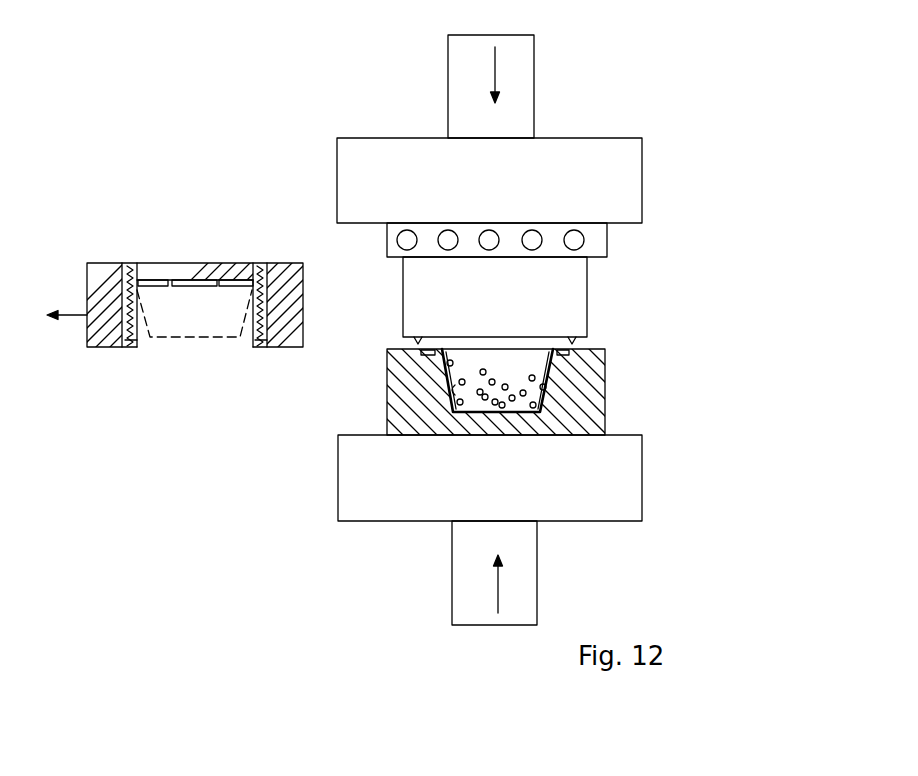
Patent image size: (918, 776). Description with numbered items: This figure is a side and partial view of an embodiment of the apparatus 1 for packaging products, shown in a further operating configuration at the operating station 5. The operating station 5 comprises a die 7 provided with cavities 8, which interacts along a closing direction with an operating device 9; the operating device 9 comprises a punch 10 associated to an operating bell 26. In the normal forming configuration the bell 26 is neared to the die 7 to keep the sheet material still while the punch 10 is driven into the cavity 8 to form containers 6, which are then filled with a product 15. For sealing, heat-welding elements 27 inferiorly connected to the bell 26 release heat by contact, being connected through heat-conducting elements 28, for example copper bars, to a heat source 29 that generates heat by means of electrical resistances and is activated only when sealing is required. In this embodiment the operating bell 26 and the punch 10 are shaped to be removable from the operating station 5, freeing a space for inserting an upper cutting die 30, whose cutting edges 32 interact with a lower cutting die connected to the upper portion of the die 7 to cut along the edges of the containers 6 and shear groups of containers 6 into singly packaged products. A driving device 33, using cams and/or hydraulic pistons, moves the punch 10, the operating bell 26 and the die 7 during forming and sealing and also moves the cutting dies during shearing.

The apparatus 1 is at (186, 80).
The operating station 5 is at (523, 266).
The containers 6 is at (553, 367).
The die 7 is at (605, 410).
The cavities 8 is at (455, 392).
The operating device 9 is at (659, 194).
The punch 10 is at (187, 320).
The product 15 is at (502, 376).
The operating bell 26 is at (108, 244).
The heat-welding elements 27 is at (127, 349).
The heat-conducting elements 28 is at (253, 280).
The heat source 29 is at (392, 237).
The upper cutting die 30 is at (575, 313).
The cutting edges 32 is at (425, 349).
The driving device 33 is at (596, 98).